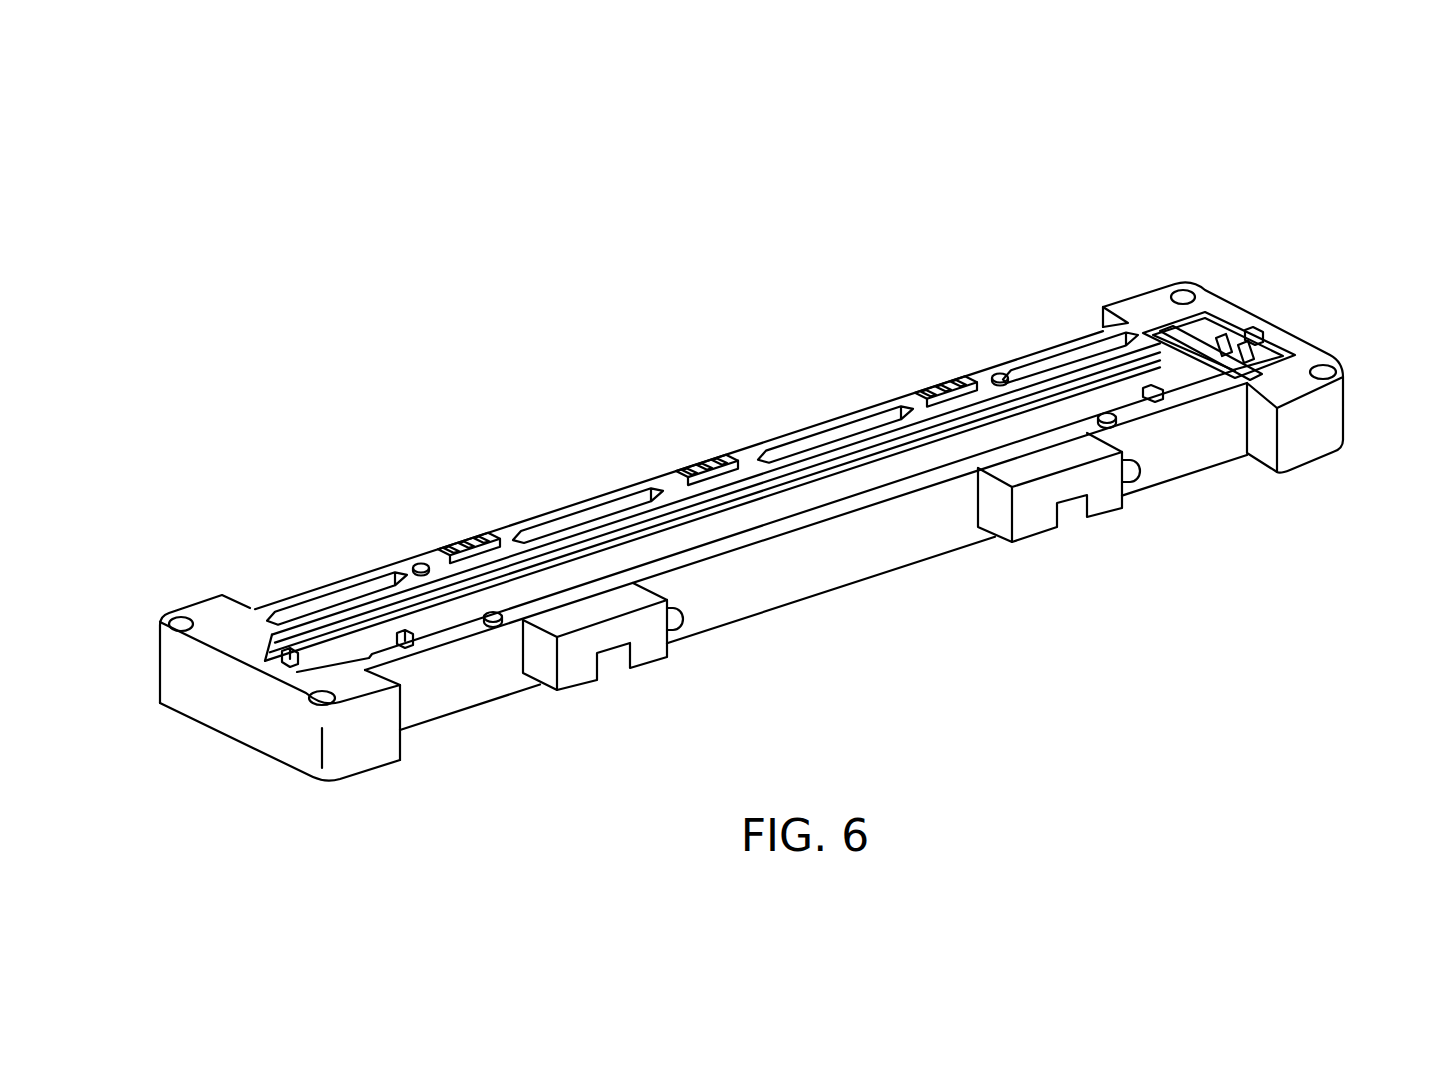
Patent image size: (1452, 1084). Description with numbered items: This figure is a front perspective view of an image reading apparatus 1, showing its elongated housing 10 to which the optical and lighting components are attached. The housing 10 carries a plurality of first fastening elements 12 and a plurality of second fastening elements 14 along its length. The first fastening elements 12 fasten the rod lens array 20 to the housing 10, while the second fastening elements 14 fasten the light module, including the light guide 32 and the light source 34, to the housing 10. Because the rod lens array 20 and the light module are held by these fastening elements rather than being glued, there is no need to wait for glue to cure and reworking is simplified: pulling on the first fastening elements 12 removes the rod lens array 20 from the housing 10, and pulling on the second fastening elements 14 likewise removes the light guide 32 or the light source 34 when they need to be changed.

The image reading apparatus 1 is at (1276, 220).
The housing 10 is at (236, 714).
The first fastening elements 12 is at (470, 541).
The second fastening elements 14 is at (297, 665).
The rod lens array 20 is at (1004, 400).
The light guide 32 is at (1118, 397).
The light source 34 is at (1180, 337).